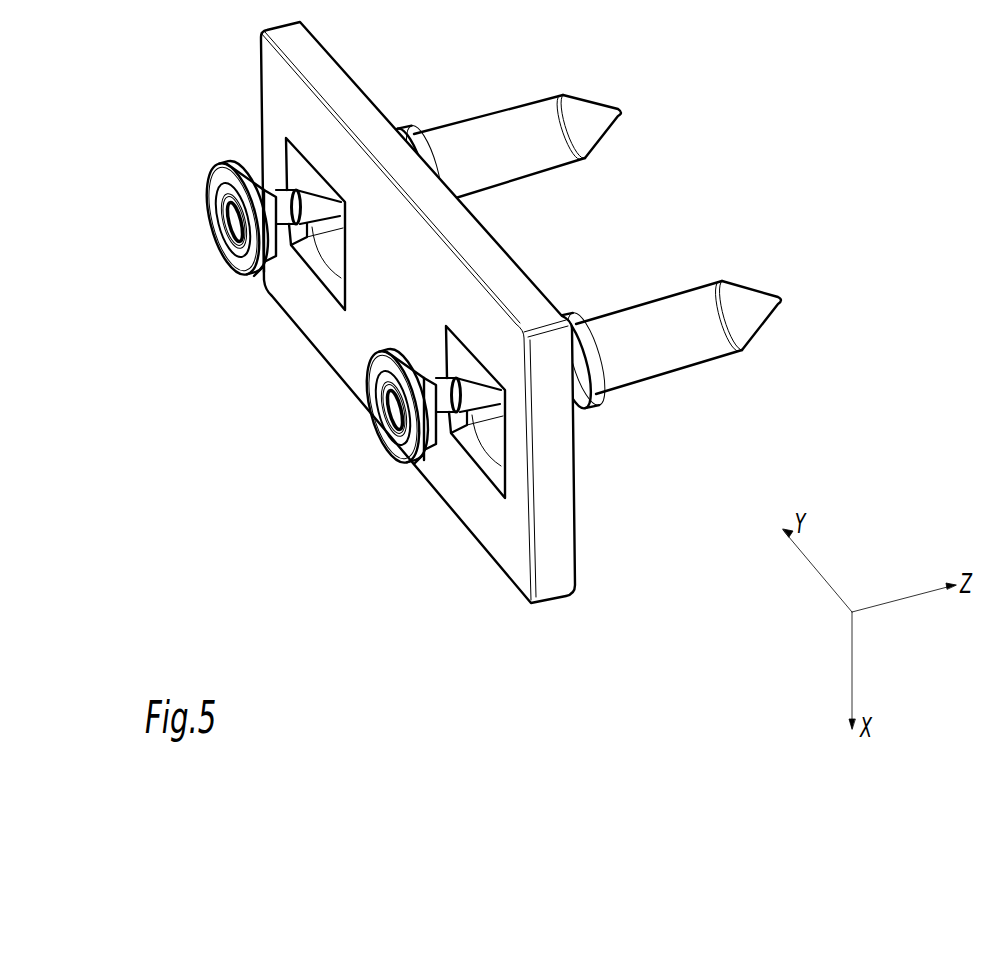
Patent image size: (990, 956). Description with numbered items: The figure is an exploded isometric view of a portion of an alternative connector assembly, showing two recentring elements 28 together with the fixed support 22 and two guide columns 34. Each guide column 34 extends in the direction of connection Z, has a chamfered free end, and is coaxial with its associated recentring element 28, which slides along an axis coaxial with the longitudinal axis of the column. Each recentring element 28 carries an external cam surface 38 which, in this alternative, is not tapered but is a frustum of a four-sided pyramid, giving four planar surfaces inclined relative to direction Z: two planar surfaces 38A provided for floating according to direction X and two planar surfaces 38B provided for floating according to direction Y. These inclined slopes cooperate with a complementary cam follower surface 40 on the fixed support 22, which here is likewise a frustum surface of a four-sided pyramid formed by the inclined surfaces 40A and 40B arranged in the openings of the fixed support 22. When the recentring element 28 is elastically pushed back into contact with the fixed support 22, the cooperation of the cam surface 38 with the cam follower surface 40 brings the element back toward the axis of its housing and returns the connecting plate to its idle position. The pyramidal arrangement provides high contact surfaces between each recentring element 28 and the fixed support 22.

The fixed support 22 is at (505, 548).
The recentring element 28 is at (235, 260).
The guide column 34 is at (522, 123).
The cam surface 38 is at (269, 299).
The planar surfaces 38A is at (253, 177).
The planar surfaces 38B is at (270, 243).
The cam follower surface 40 is at (379, 336).
The frustum surface of a four-sided pyramid 40A is at (330, 287).
The frustum surface of a four-sided pyramid 40B is at (293, 163).